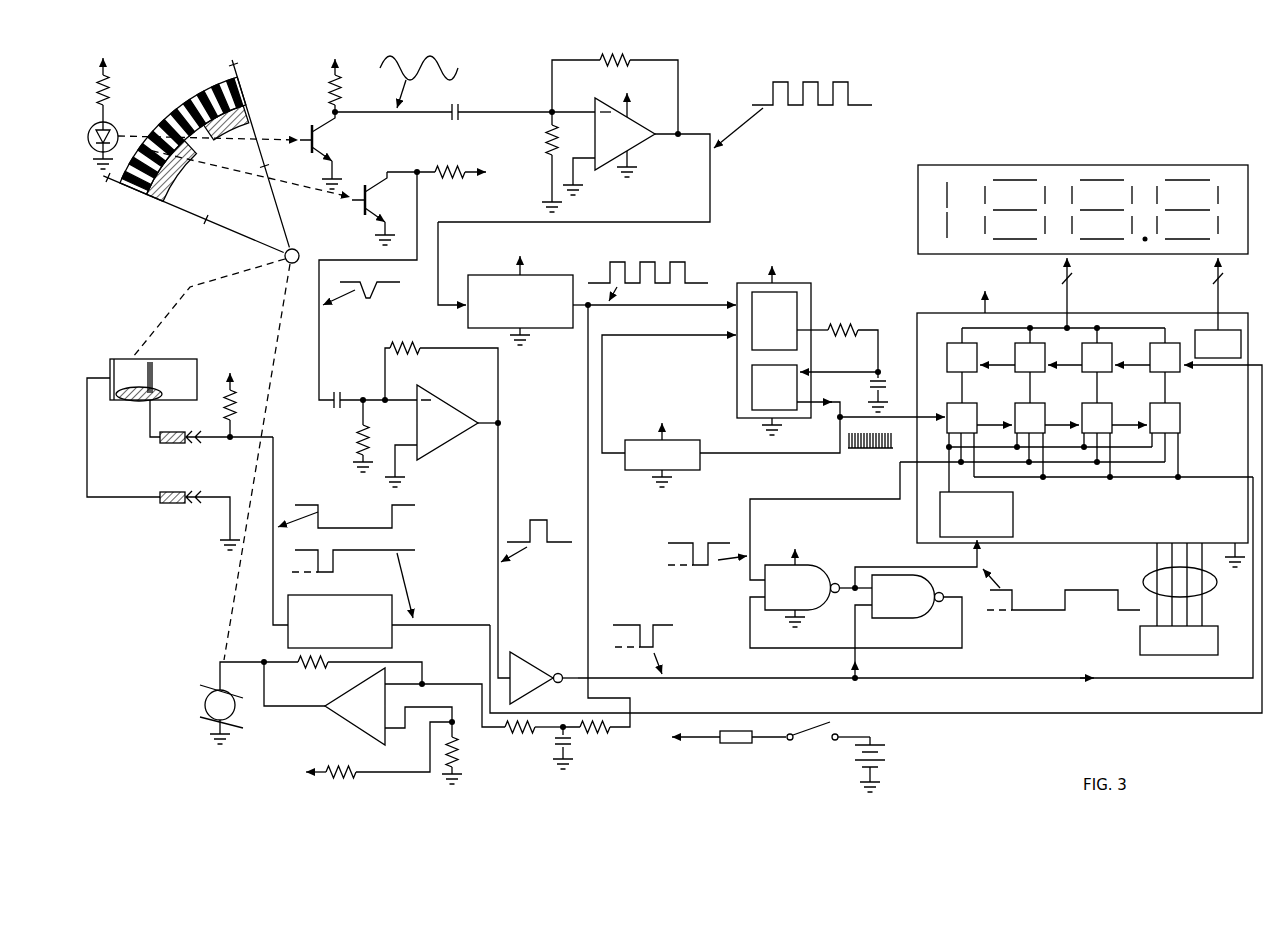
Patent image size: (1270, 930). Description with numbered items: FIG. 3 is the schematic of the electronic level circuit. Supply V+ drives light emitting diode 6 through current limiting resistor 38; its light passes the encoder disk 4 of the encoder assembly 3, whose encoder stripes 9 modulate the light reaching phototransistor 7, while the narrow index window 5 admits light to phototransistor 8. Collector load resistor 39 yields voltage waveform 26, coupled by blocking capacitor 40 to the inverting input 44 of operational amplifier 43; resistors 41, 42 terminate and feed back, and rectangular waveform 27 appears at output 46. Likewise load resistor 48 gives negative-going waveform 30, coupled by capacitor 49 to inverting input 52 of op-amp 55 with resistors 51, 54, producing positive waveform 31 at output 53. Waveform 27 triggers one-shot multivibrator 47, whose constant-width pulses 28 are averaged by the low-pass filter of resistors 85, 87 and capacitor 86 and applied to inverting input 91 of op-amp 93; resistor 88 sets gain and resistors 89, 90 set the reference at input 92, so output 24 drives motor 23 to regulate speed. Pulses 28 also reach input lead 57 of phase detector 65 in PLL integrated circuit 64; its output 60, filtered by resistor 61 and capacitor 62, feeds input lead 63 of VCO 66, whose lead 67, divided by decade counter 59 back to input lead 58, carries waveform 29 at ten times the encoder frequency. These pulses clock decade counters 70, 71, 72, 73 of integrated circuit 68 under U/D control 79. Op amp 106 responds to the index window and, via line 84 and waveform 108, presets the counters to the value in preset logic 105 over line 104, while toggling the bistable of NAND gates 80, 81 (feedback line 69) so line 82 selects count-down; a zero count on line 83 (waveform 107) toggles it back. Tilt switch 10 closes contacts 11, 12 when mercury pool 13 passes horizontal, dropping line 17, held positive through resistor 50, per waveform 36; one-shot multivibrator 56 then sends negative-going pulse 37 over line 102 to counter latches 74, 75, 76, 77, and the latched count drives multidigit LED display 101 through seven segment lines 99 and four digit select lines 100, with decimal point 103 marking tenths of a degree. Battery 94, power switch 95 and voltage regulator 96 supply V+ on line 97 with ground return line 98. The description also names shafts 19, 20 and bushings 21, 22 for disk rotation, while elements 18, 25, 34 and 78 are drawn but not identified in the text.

The encoder assembly 3 is at (160, 197).
The encoder disk 4 is at (231, 80).
The index window 5 is at (180, 138).
The light emitting diode 6 is at (117, 128).
The phototransistor 7 is at (326, 140).
The phototransistor 8 is at (376, 200).
The encoder stripes 9 is at (207, 92).
The tilt switch 10 is at (172, 358).
The contact 11 is at (118, 375).
The contact 12 is at (154, 375).
The mercury pool 13 is at (125, 402).
The line 17 is at (150, 442).
The lead 18 is at (148, 500).
The shaft 19 is at (175, 446).
The shaft 20 is at (175, 506).
The bushing 21 is at (200, 446).
The bushing 22 is at (200, 506).
The motor 23 is at (233, 712).
The output 24 is at (244, 660).
The lead 25 is at (226, 735).
The voltage waveform 26 is at (419, 74).
The rectangular waveform 27 is at (760, 83).
The output pulse 28 is at (628, 262).
The waveform 29 is at (872, 450).
The negative-going waveform 30 is at (378, 296).
The positive waveform 31 is at (547, 518).
The up/down signal 34 is at (1040, 612).
The waveform 36 is at (400, 517).
The negative-going pulse 37 is at (347, 553).
The current limiting resistor 38 is at (113, 81).
The collector load resistor 39 is at (343, 77).
The blocking capacitor 40 is at (470, 108).
The resistor 41 is at (544, 160).
The resistor 42 is at (615, 85).
The operational amplifier 43 is at (636, 125).
The inverting input 44 is at (598, 110).
The output 46 is at (657, 137).
The one-shot multivibrator 47 is at (548, 274).
The load resistor 48 is at (449, 163).
The capacitor 49 is at (328, 409).
The resistor 50 is at (248, 397).
The resistor 51 is at (355, 434).
The inverting input 52 is at (420, 394).
The output 53 is at (502, 422).
The resistor 54 is at (441, 373).
The op-amp 55 is at (448, 437).
The one-shot multivibrator 56 is at (288, 612).
The input lead 57 is at (733, 300).
The input lead 58 is at (734, 341).
The decade counter 59 is at (632, 440).
The output 60 is at (811, 325).
The resistor 61 is at (853, 348).
The capacitor 62 is at (886, 378).
The input lead 63 is at (812, 371).
The PLL integrated circuit 64 is at (800, 283).
The phase detector 65 is at (798, 300).
The voltage controlled oscillator 66 is at (752, 395).
The lead 67 is at (822, 410).
The integrated circuit 68 is at (915, 330).
The line 69 is at (750, 613).
The decade counter 70 is at (949, 414).
The decade counter 71 is at (1017, 414).
The decade counter 72 is at (1084, 414).
The decade counter 73 is at (1151, 414).
The counter latch 74 is at (949, 353).
The counter latch 75 is at (1016, 353).
The counter latch 76 is at (1083, 353).
The counter latch 77 is at (1151, 353).
The multiplexer 78 is at (1203, 328).
The U/D control 79 is at (1013, 508).
The NAND gate 80 is at (812, 575).
The NAND gate 81 is at (920, 610).
The line 82 is at (885, 567).
The line 83 is at (815, 497).
The line 84 is at (978, 676).
The resistor 85 is at (596, 530).
The capacitor 86 is at (552, 745).
The resistor 87 is at (534, 738).
The resistor 88 is at (341, 672).
The resistor 89 is at (366, 751).
The resistor 90 is at (461, 751).
The inverting input 91 is at (393, 680).
The input 92 is at (392, 733).
The op-amp 93 is at (352, 715).
The battery 94 is at (886, 752).
The power switch 95 is at (808, 745).
The voltage regulator 96 is at (735, 745).
The line 97 is at (690, 745).
The line 98 is at (222, 553).
The seven segment lines 99 is at (1065, 271).
The digit select lines 100 is at (1215, 271).
The multidigit LED display 101 is at (1110, 163).
The line 102 is at (1232, 368).
The decimal point 103 is at (1143, 243).
The line 104 is at (1150, 578).
The preset logic 105 is at (1140, 652).
The op amp 106 is at (525, 662).
The waveform 107 is at (700, 543).
The waveform 108 is at (645, 622).